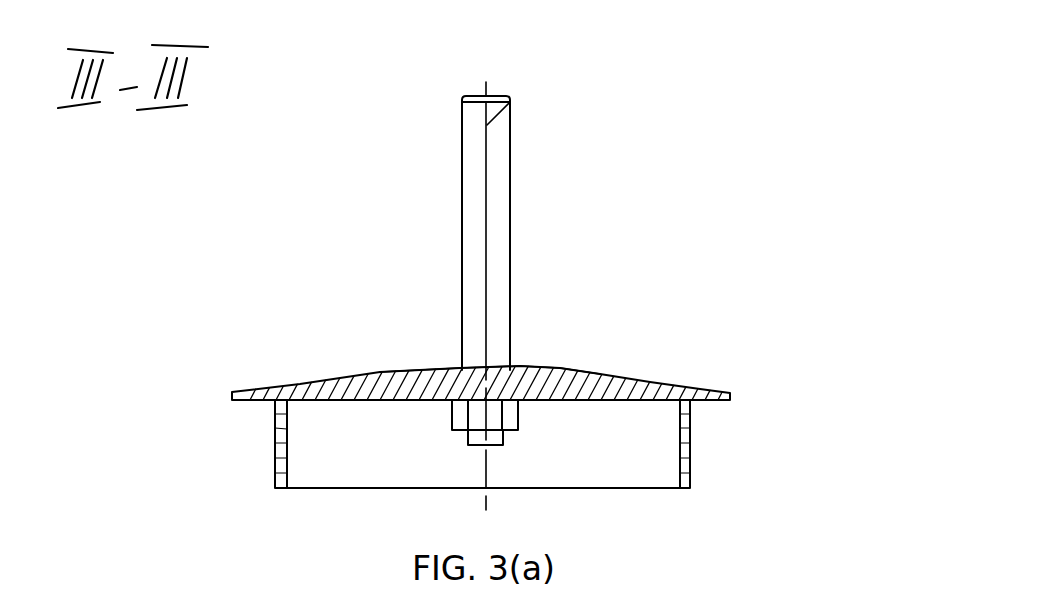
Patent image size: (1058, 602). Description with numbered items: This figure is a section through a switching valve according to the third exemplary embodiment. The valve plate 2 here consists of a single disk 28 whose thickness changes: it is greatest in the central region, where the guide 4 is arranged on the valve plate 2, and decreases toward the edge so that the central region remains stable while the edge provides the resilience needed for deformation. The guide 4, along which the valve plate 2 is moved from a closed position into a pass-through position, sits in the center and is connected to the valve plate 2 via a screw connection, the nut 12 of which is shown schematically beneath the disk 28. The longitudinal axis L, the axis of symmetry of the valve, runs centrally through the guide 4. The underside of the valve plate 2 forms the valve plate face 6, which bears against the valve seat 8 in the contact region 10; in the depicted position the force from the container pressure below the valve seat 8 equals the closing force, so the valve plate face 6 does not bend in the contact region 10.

The valve plate 2 is at (640, 370).
The guide 4 is at (495, 168).
The valve plate face 6 is at (370, 400).
The valve seat 8 is at (690, 468).
The contact region 10 is at (690, 406).
The nut 12 is at (555, 370).
The disk 28 is at (411, 370).
The longitudinal axis L is at (510, 100).